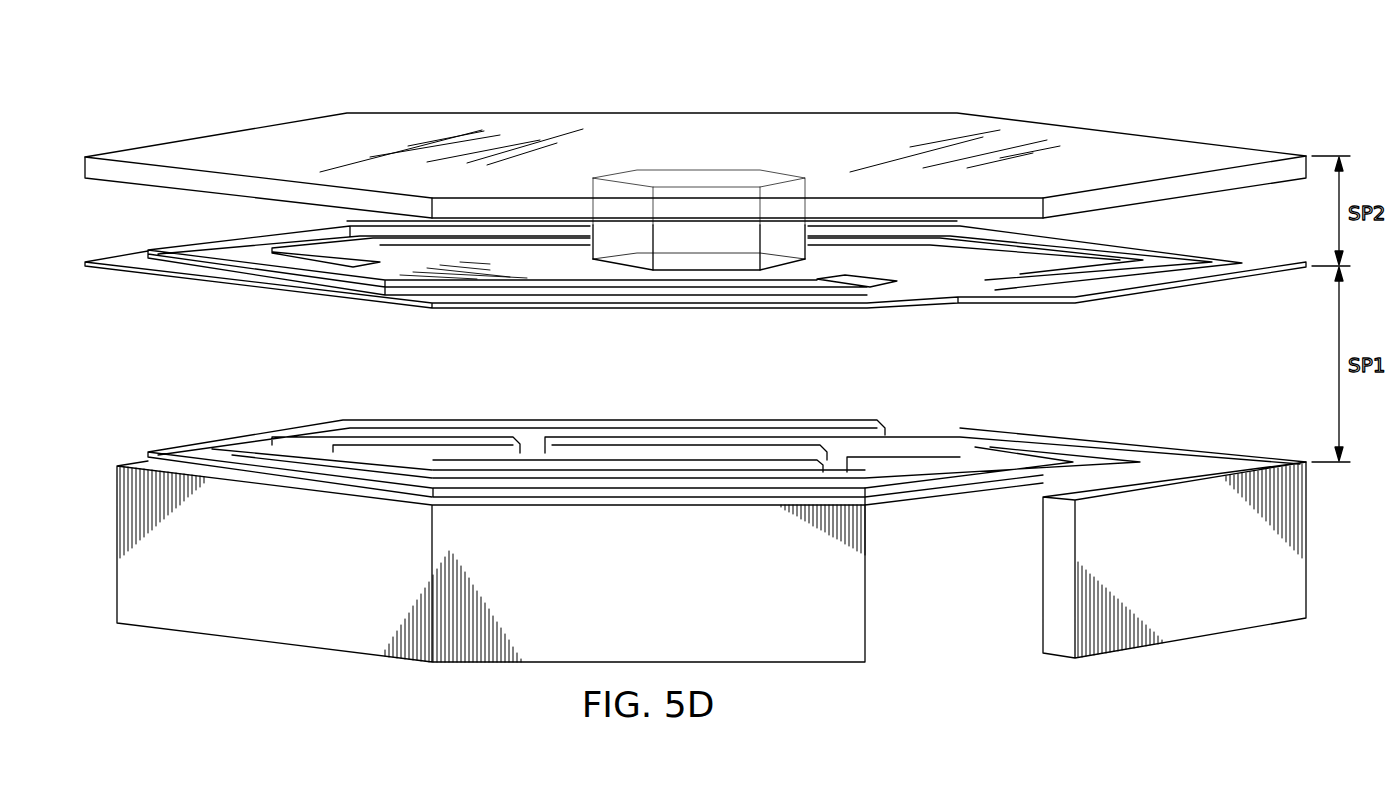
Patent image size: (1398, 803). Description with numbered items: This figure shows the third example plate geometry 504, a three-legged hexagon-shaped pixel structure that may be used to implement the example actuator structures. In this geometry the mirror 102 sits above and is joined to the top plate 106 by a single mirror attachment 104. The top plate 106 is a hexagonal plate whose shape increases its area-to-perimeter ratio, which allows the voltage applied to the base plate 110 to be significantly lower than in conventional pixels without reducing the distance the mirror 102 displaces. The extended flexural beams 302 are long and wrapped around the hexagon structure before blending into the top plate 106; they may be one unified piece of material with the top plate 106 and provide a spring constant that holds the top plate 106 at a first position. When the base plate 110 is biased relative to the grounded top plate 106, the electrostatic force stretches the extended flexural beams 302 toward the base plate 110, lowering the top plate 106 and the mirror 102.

The mirror 102 is at (707, 122).
The mirror attachment 104 is at (807, 243).
The top plate 106 is at (875, 293).
The extended flexural beam 302 is at (1110, 287).
The base plate 110 is at (197, 452).
The third example plate geometry 504 is at (695, 347).